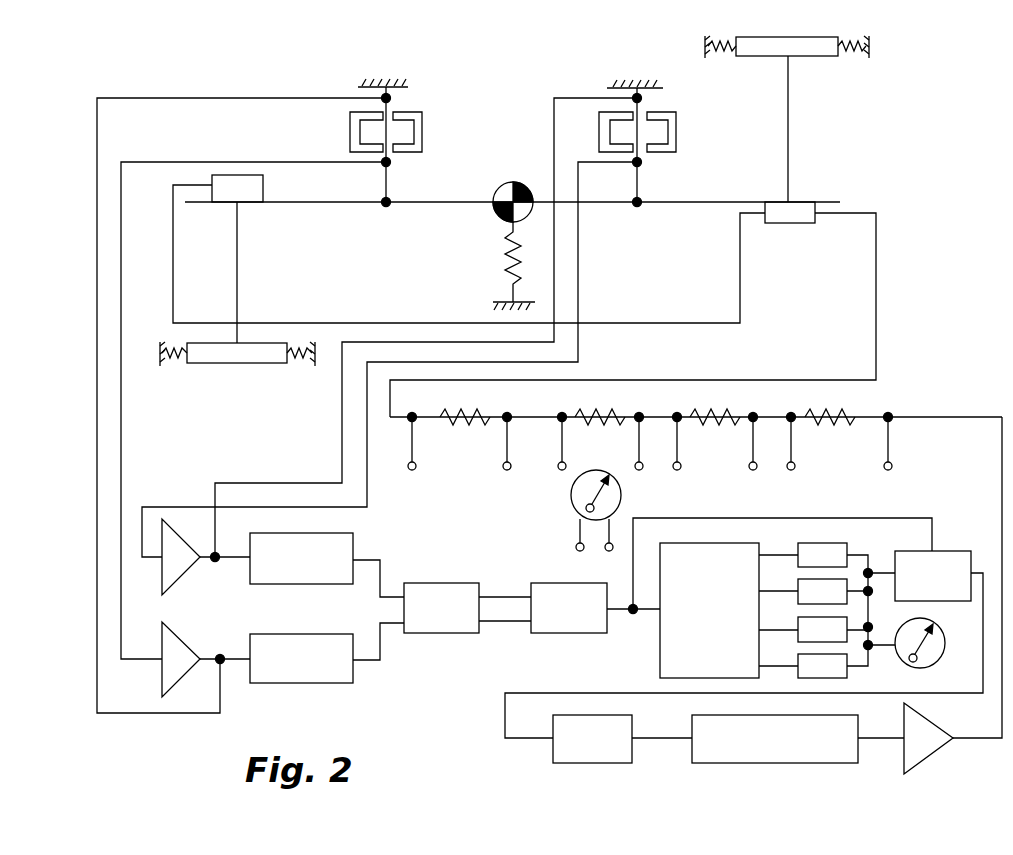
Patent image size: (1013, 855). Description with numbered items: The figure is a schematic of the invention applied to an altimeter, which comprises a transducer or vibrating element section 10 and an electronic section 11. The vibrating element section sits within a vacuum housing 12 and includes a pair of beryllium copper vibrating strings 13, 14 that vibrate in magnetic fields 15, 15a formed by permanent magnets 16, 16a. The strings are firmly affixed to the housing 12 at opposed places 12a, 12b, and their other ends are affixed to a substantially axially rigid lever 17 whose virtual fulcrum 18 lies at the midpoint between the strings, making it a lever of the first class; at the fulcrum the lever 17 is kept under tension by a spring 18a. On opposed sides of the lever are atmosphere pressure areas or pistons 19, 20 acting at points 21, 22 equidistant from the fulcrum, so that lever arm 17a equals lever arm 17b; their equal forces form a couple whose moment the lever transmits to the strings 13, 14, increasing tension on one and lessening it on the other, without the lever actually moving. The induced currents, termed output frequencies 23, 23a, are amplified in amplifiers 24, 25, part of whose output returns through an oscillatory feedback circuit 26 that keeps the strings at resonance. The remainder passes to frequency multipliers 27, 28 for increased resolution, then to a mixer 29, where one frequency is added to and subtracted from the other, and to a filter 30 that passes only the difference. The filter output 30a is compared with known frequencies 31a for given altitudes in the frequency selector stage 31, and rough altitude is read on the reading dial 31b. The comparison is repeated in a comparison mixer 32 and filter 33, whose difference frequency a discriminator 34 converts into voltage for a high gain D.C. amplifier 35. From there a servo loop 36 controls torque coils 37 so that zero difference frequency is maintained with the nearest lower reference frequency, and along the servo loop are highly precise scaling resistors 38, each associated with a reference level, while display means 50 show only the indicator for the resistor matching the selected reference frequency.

The vibrating element section 10 is at (33, 73).
The electronic section 11 is at (29, 561).
The vacuum housing 12 is at (486, 82).
The housing attachment place 12a is at (388, 82).
The housing attachment place 12b is at (636, 83).
The vibrating string 13 is at (393, 110).
The vibrating string 14 is at (645, 108).
The magnetic field 15 is at (375, 114).
The magnetic field 15a is at (624, 114).
The permanent magnet 16 is at (354, 141).
The permanent magnet 16a is at (658, 144).
The lever 17 is at (192, 204).
The lever arm 17a is at (447, 205).
The lever arm 17b is at (568, 205).
The virtual fulcrum 18 is at (530, 186).
The spring 18a is at (508, 260).
The atmosphere pressure area 19 is at (795, 37).
The atmosphere pressure area 20 is at (246, 364).
The point of action 21 is at (790, 200).
The point of action 22 is at (240, 206).
The output frequency 23 is at (123, 452).
The output frequency 23a is at (345, 508).
The amplifier 24 is at (172, 532).
The amplifier 25 is at (178, 652).
The oscillatory feedback circuit 26 is at (96, 478).
The frequency multiplier 27 is at (312, 584).
The frequency multiplier 28 is at (300, 634).
The mixer 29 is at (424, 634).
The filter 30 is at (546, 634).
The filter output 30a is at (625, 614).
The frequency selector stage 31 is at (708, 543).
The known frequencies 31a is at (818, 543).
The reading dial 31b is at (910, 668).
The comparison mixer 32 is at (916, 602).
The filter 33 is at (553, 749).
The discriminator 34 is at (736, 765).
The D.C. amplifier 35 is at (946, 750).
The servo loop 36 is at (1002, 712).
The torque coils 37 is at (210, 186).
The scaling resistors 38 is at (826, 425).
The display means 50 is at (620, 484).